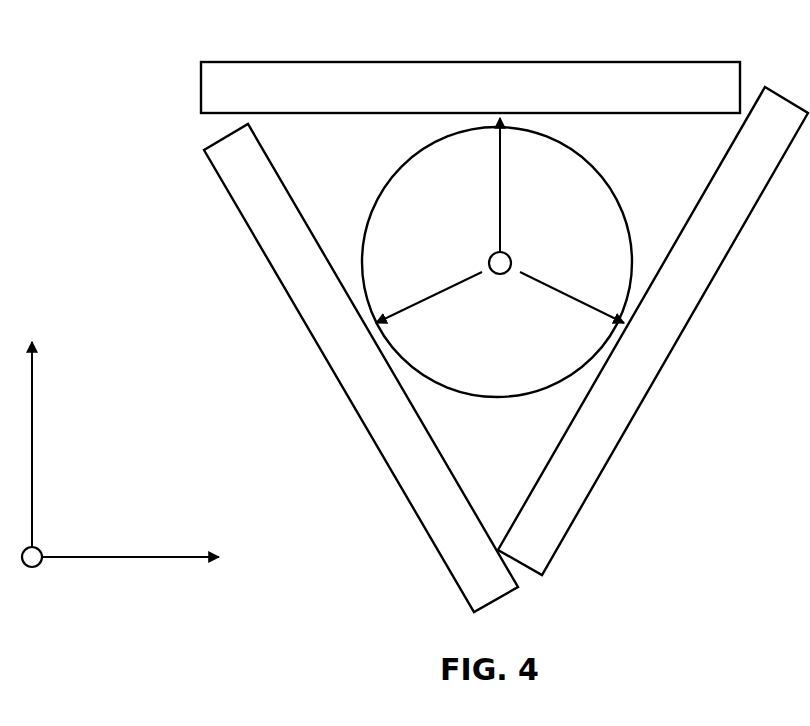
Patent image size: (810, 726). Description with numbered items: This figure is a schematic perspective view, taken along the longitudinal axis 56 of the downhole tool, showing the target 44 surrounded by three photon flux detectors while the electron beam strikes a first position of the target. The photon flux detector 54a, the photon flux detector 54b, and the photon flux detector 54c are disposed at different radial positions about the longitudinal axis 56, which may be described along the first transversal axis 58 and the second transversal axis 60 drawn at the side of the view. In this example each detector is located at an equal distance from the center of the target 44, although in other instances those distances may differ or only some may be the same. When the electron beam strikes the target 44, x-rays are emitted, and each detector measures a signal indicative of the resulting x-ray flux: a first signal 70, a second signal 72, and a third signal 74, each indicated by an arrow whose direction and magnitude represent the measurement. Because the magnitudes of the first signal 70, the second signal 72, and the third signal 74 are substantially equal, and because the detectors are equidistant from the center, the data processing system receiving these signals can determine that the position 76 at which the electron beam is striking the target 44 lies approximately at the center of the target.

The target 44 is at (588, 158).
The photon flux detector 54a is at (470, 62).
The photon flux detector 54b is at (674, 345).
The photon flux detector 54c is at (339, 380).
The longitudinal axis 56 is at (39, 549).
The first transversal axis 58 is at (34, 447).
The second transversal axis 60 is at (135, 555).
The first signal 70 is at (497, 187).
The second signal 72 is at (560, 291).
The third signal 74 is at (432, 294).
The position 76 is at (490, 253).